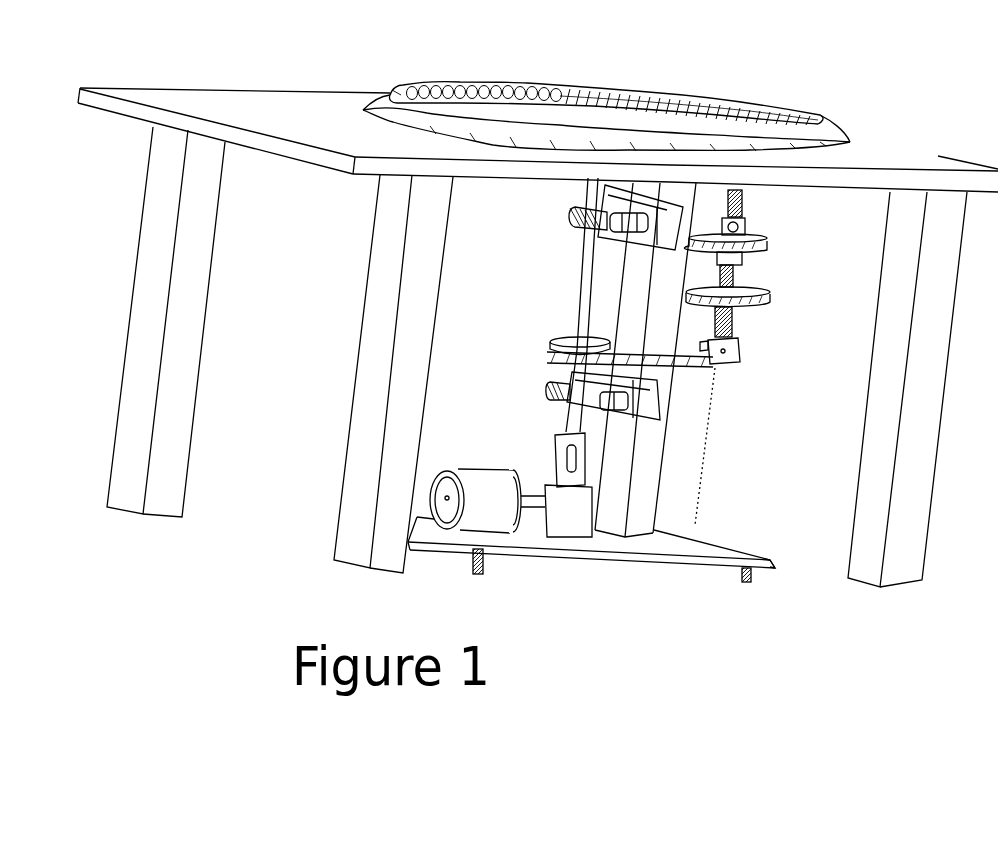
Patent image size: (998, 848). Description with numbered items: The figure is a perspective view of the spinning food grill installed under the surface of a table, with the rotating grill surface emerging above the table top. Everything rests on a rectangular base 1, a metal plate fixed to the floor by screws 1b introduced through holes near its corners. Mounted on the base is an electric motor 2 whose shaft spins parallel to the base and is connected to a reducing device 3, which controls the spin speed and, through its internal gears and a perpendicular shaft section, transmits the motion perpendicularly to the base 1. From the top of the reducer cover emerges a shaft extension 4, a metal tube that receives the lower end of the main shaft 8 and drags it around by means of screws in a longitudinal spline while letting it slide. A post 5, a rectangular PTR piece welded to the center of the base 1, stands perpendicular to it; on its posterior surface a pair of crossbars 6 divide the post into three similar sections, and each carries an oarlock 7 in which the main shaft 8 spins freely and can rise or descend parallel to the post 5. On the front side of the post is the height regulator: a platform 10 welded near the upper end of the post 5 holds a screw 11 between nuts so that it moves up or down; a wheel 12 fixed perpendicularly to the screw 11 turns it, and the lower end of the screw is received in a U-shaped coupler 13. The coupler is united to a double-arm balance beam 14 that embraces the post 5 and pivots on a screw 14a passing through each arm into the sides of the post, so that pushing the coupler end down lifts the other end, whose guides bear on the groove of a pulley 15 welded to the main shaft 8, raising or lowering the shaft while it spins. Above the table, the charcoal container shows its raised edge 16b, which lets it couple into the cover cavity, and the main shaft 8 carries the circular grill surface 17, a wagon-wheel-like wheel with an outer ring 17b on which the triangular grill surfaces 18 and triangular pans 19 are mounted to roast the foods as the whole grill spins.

The rectangular base 1 is at (713, 530).
The screws 1b is at (776, 569).
The electric motor 2 is at (500, 464).
The reducing device 3 is at (577, 512).
The shaft extension 4 is at (557, 443).
The post 5 is at (667, 458).
The crossbars 6 is at (672, 385).
The oarlock 7 is at (574, 213).
The main shaft 8 is at (584, 277).
The platform 10 is at (790, 240).
The screw 11 is at (752, 195).
The wheel 12 is at (796, 284).
The coupler 13 is at (748, 340).
The double-arm balance beam 14 is at (722, 362).
The screw 14a is at (668, 333).
The pulley 15 is at (550, 340).
The raised edge 16b is at (853, 143).
The circular grill surface 17 is at (782, 72).
The ring 17b is at (832, 113).
The triangular grill surfaces 18 is at (519, 74).
The triangular pans 19 is at (625, 85).